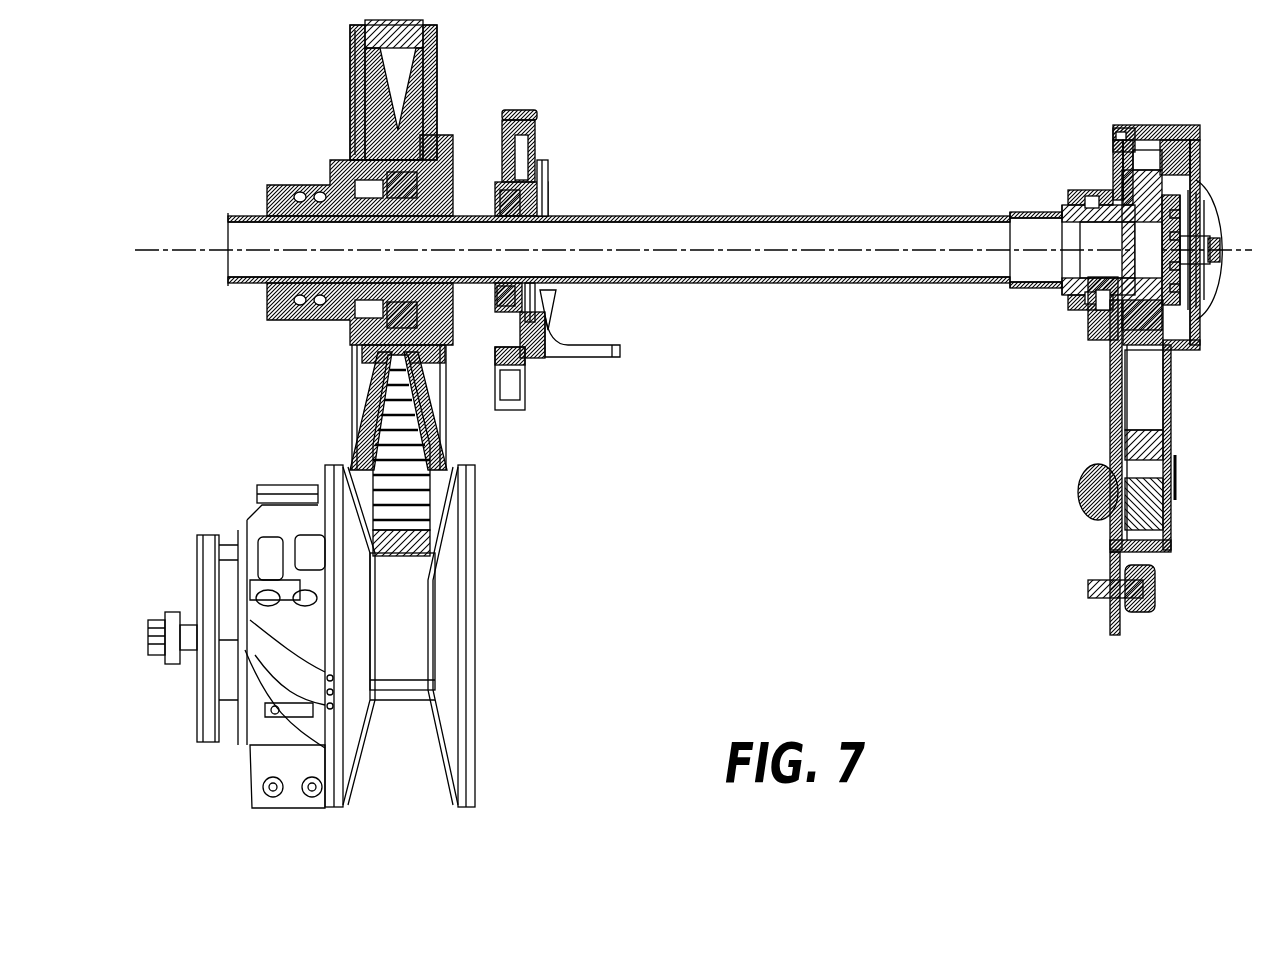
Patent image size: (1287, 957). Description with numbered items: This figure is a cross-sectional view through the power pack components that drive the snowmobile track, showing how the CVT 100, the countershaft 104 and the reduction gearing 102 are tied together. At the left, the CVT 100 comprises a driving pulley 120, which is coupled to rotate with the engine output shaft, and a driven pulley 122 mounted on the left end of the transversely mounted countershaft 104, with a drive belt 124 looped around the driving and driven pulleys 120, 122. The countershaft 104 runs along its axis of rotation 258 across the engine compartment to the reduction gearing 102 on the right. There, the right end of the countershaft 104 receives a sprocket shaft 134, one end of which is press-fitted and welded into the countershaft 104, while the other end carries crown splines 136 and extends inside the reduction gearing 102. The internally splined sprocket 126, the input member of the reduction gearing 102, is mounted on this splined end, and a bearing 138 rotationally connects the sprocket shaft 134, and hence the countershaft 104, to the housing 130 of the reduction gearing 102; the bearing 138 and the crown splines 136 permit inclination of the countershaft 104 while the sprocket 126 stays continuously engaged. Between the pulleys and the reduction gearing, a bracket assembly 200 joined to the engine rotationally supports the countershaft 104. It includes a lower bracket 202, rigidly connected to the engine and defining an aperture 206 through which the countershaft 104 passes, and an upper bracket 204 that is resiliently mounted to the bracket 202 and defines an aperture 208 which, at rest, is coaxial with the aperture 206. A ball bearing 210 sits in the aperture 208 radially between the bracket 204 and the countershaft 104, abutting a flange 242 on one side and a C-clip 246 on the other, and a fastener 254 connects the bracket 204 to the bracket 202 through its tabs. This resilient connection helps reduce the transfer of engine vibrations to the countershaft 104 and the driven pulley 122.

The CVT 100 is at (294, 413).
The reduction gearing 102 is at (1202, 455).
The countershaft 104 is at (760, 284).
The driving pulley 120 is at (455, 668).
The driven pulley 122 is at (362, 84).
The drive belt 124 is at (397, 501).
The sprocket 126 is at (1168, 282).
The housing 130 is at (1172, 395).
The sprocket shaft 134 is at (1062, 260).
The crown splines 136 is at (1176, 220).
The bearing 138 is at (1090, 212).
The bracket assembly 200 is at (620, 385).
The bracket 202 is at (575, 345).
The bracket 204 is at (522, 128).
The aperture 206 is at (548, 290).
The aperture 208 is at (502, 160).
The ball bearing 210 is at (545, 188).
The flange 242 is at (548, 297).
The C-clip 246 is at (496, 303).
The fastener 254 is at (513, 108).
The axis of rotation 258 is at (855, 255).